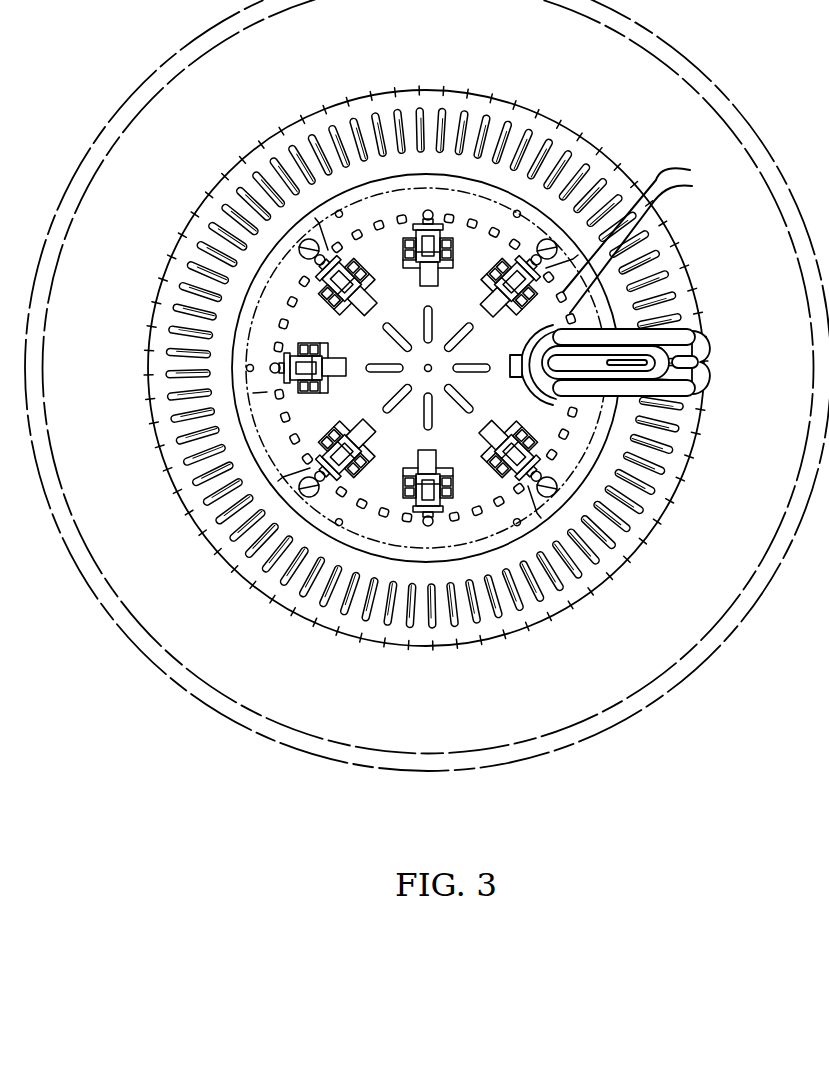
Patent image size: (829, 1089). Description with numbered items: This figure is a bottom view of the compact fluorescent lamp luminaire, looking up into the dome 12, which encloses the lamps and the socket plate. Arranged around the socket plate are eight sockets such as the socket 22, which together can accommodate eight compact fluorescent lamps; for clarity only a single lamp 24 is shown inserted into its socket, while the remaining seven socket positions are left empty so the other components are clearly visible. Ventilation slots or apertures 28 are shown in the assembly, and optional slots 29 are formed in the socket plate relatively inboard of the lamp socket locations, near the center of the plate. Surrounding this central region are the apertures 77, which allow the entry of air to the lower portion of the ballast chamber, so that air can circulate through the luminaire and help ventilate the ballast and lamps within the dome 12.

The dome 12 is at (688, 47).
The socket 22 is at (484, 256).
The lamp 24 is at (692, 320).
The ventilation slots 28 is at (648, 236).
The optional slots 29 is at (424, 421).
The apertures 77 is at (480, 603).